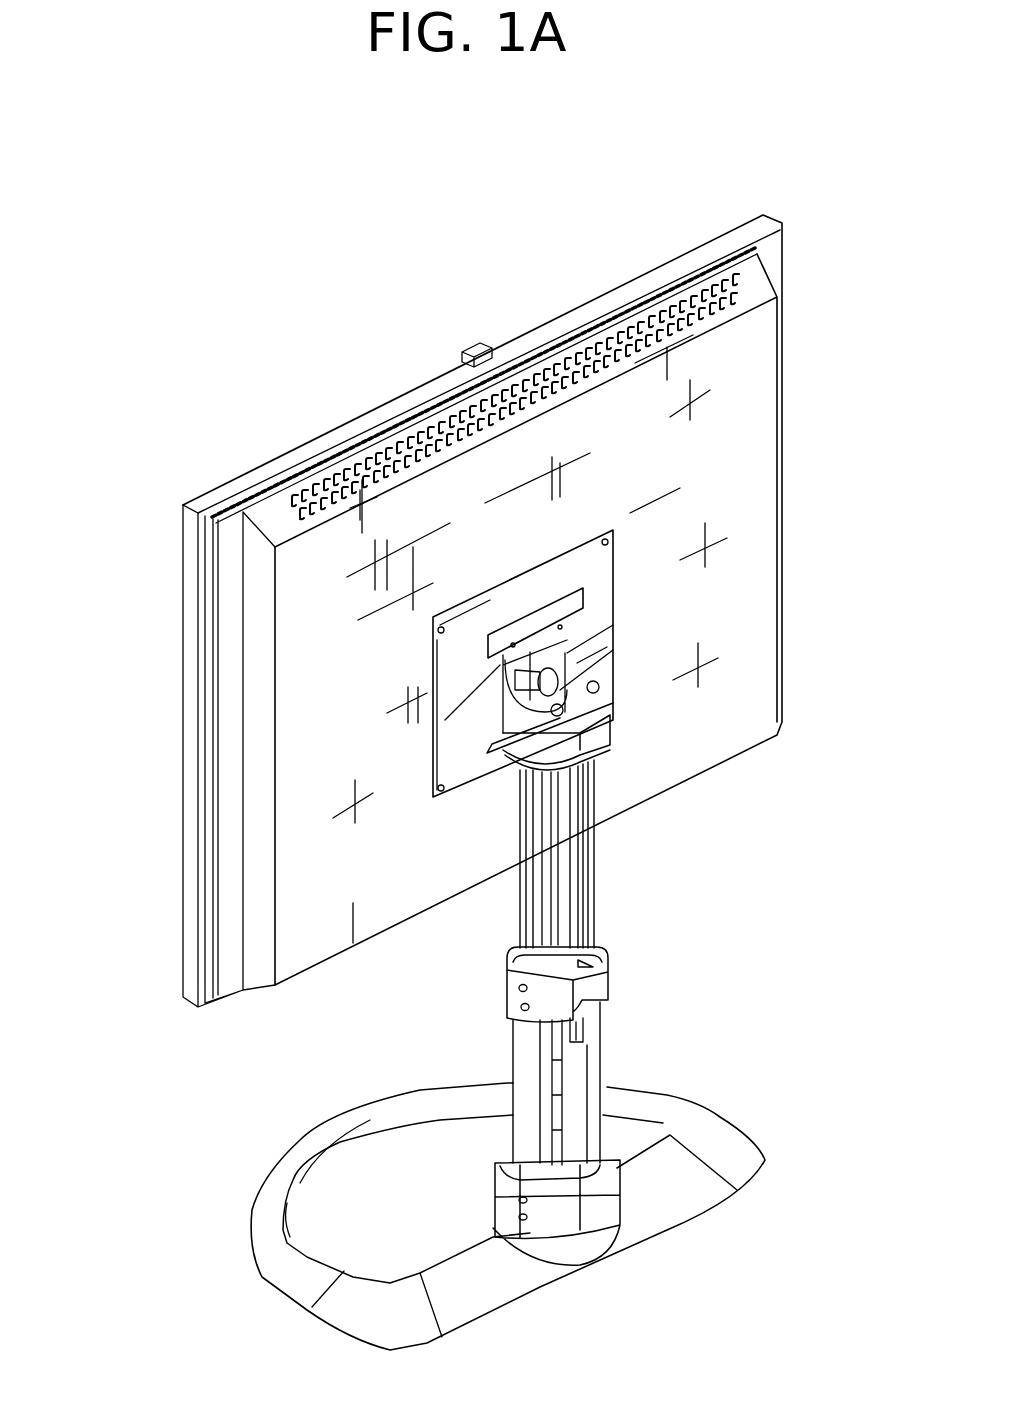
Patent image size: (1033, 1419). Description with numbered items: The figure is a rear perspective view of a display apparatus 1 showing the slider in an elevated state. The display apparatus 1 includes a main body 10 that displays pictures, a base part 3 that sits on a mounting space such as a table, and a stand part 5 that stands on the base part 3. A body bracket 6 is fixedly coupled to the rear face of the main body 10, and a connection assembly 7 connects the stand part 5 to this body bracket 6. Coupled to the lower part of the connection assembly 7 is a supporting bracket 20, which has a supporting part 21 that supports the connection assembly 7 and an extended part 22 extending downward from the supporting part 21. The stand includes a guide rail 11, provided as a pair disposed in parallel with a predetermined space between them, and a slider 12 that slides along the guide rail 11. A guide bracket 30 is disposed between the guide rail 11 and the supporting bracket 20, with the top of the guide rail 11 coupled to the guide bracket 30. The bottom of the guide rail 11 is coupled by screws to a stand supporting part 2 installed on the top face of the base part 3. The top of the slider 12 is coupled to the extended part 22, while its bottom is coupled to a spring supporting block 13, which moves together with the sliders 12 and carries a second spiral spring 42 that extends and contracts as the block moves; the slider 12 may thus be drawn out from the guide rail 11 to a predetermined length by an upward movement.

The display apparatus 1 is at (313, 300).
The main body 10 is at (180, 758).
The body bracket 6 is at (437, 648).
The connection assembly 7 is at (575, 607).
The supporting bracket 20 is at (705, 765).
The supporting part 21 is at (620, 747).
The extended part 22 is at (577, 792).
The slider 12 is at (598, 860).
The stand part 5 is at (463, 973).
The guide bracket 30 is at (612, 980).
The spring supporting block 13 is at (545, 1035).
The second spiral spring 42 is at (590, 1030).
The guide rail 11 is at (515, 1073).
The base part 3 is at (700, 1105).
The stand supporting part 2 is at (590, 1223).